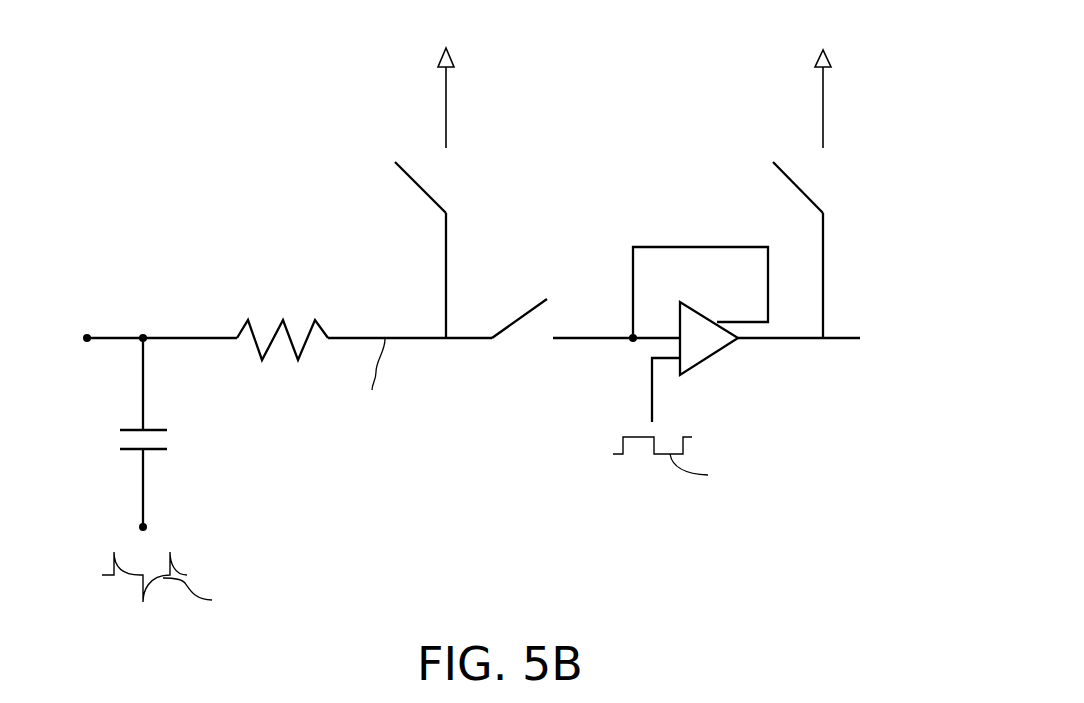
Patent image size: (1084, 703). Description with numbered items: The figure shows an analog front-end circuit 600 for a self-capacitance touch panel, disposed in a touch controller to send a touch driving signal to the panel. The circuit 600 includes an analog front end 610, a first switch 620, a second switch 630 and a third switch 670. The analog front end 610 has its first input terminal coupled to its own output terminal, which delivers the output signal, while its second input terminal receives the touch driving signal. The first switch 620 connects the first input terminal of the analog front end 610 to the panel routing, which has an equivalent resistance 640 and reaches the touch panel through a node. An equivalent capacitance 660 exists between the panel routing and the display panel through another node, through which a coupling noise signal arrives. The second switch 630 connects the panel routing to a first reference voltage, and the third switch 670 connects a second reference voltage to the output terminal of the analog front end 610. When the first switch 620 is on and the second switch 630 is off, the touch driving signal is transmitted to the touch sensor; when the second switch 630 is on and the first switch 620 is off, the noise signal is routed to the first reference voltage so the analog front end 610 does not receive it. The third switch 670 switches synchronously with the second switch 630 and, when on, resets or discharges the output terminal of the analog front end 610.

The analog front-end circuit 600 is at (817, 611).
The analog front end 610 is at (708, 358).
The first switch 620 is at (525, 337).
The second switch 630 is at (447, 175).
The equivalent resistance 640 is at (286, 315).
The equivalent capacitance 660 is at (178, 438).
The third switch 670 is at (825, 175).